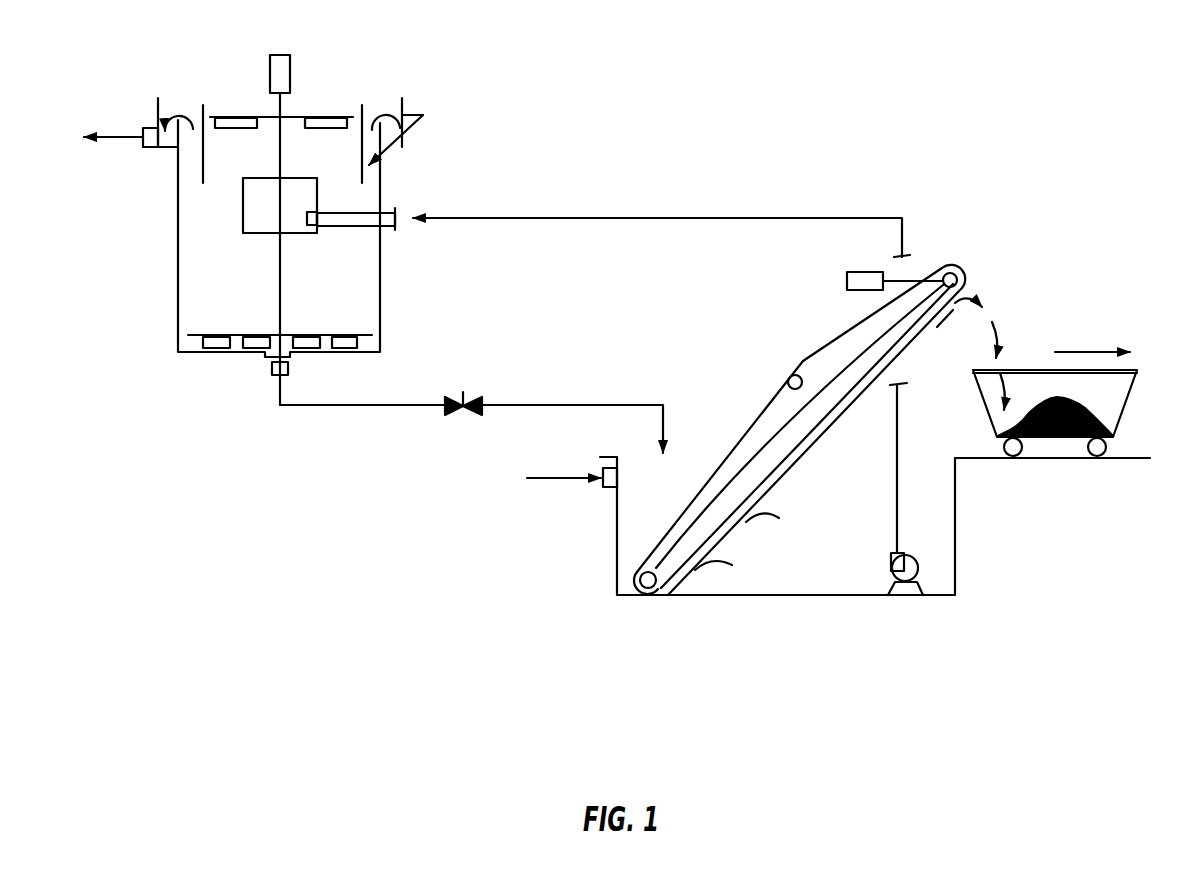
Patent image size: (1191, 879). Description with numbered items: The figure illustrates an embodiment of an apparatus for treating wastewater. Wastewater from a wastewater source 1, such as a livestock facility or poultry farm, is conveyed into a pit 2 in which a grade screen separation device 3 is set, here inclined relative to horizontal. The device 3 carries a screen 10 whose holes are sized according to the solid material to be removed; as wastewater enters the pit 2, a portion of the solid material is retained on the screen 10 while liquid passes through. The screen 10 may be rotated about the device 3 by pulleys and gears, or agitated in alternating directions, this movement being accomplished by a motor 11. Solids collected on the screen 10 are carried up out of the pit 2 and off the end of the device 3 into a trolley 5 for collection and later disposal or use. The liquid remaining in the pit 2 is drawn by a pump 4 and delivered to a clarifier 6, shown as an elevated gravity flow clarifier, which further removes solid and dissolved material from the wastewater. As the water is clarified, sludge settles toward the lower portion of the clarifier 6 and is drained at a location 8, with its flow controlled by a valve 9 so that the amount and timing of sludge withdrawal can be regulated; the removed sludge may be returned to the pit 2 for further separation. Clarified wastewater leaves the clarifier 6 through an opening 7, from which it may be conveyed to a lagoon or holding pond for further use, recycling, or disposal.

The wastewater source 1 is at (525, 495).
The pit 2 is at (778, 603).
The grade screen separation device 3 is at (785, 422).
The pump 4 is at (888, 553).
The trolley 5 is at (1095, 335).
The clarifier 6 is at (342, 60).
The opening 7 is at (147, 127).
The location 8 is at (289, 370).
The valve 9 is at (473, 375).
The screen 10 is at (805, 363).
The motor 11 is at (847, 280).